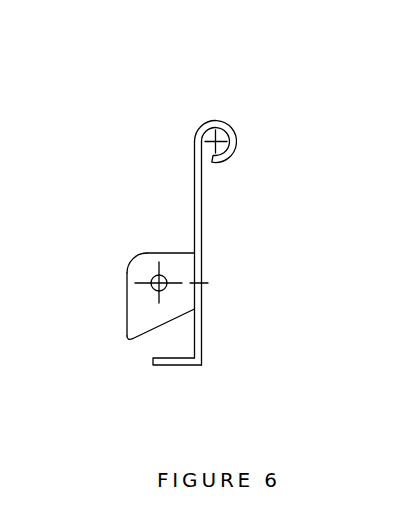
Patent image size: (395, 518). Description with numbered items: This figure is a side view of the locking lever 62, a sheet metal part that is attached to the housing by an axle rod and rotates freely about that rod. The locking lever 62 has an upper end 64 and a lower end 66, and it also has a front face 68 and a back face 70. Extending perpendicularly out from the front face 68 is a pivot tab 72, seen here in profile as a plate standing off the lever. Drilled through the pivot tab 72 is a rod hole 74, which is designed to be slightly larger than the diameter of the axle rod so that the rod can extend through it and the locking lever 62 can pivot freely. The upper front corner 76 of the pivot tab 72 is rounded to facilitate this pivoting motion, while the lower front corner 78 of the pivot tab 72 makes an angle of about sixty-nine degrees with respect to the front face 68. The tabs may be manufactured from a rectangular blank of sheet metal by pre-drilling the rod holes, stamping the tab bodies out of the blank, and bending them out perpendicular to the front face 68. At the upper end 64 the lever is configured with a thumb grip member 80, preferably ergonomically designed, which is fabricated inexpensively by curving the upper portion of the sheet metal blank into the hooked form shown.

The locking lever 62 is at (255, 53).
The upper end 64 is at (221, 119).
The lower end 66 is at (204, 364).
The front face 68 is at (194, 175).
The back face 70 is at (202, 203).
The pivot tab 72 is at (135, 306).
The rod hole 74 is at (165, 278).
The upper front corner 76 is at (145, 253).
The lower front corner 78 is at (130, 339).
The thumb grip member 80 is at (240, 136).